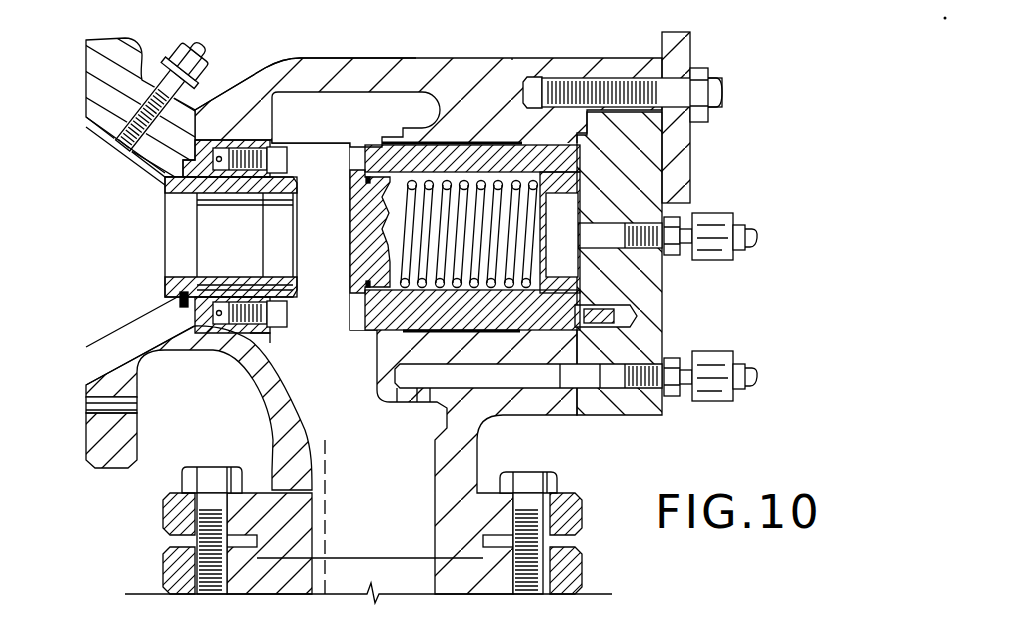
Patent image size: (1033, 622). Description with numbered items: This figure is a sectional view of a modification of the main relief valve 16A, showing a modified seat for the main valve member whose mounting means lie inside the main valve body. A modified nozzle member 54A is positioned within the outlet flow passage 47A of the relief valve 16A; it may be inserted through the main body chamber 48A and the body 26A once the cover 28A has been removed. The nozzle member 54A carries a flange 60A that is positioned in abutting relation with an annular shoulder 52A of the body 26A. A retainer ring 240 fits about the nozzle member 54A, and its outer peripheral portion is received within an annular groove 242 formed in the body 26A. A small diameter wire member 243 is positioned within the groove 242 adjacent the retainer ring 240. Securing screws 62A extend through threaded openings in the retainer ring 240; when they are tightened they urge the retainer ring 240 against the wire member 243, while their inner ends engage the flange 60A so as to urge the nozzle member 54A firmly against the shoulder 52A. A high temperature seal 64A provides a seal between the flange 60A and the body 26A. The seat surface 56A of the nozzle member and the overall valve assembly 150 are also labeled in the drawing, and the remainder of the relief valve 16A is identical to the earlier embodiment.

The main relief valve 16A is at (433, 59).
The body 26A is at (320, 68).
The cover 28A is at (643, 291).
The outlet flow passage 47A is at (134, 226).
The main body chamber 48A is at (362, 105).
The annular shoulder 52A is at (203, 333).
The nozzle member 54A is at (181, 273).
The seat ring 56A is at (220, 272).
The flange 60A is at (205, 147).
The securing screws 62A is at (289, 312).
The high temperature seal 64A is at (180, 296).
The valve assembly 150 is at (524, 30).
The retainer ring 240 is at (237, 336).
The annular groove 242 is at (280, 152).
The wire member 243 is at (270, 355).